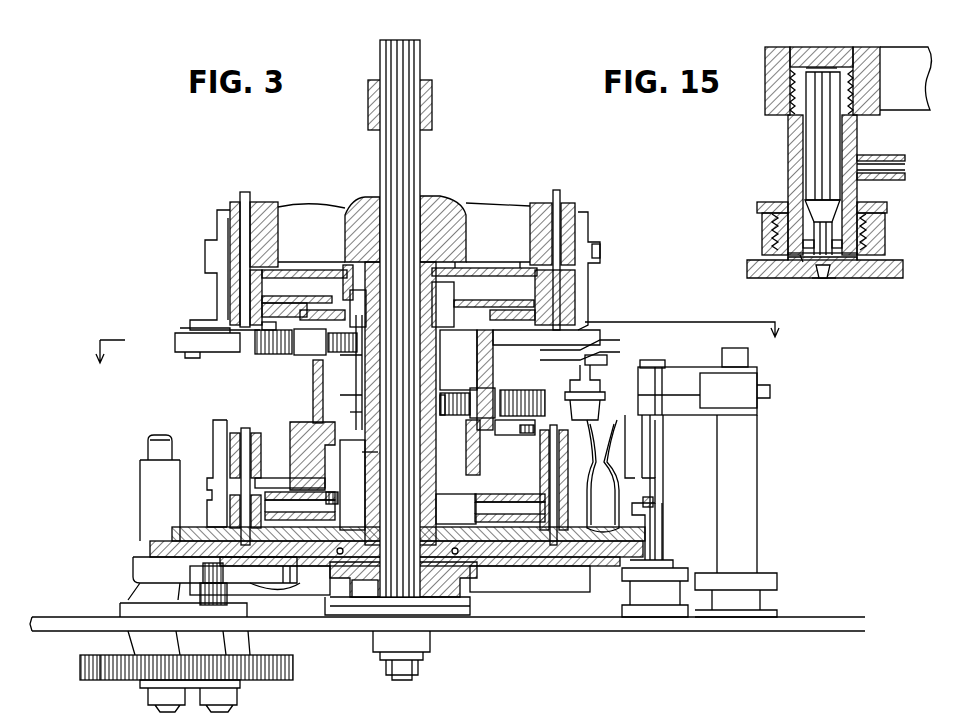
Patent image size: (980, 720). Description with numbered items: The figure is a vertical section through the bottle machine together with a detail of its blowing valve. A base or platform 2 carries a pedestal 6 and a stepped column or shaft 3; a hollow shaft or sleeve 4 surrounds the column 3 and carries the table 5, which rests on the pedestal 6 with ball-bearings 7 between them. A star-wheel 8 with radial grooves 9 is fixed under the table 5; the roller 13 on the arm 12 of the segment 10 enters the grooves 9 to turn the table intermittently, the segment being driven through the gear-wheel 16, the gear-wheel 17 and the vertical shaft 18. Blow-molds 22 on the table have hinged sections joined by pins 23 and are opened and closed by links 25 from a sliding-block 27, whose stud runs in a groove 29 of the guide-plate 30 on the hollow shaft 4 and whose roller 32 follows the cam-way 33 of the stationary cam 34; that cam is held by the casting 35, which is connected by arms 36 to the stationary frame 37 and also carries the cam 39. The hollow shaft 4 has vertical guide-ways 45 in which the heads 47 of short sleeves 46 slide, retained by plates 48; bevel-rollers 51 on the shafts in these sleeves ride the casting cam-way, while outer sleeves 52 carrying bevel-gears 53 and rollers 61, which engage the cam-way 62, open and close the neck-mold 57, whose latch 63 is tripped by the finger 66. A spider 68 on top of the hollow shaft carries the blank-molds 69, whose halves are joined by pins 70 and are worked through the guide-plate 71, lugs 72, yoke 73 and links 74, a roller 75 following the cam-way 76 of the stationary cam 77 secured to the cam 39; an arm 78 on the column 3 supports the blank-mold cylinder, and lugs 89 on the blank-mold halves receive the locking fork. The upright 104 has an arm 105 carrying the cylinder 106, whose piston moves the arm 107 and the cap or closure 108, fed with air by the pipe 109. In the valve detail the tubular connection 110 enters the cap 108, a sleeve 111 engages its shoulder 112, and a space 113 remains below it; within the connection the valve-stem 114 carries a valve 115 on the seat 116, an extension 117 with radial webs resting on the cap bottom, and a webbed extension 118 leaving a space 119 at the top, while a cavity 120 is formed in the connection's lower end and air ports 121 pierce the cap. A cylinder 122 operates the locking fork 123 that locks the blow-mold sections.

In FIG. 3, the base or platform 2 is at (322, 634).
In FIG. 3, the column or shaft 3 is at (413, 151).
In FIG. 3, the hollow shaft or sleeve 4 is at (442, 392).
In FIG. 3, the plate or table 5 is at (607, 558).
In FIG. 3, the pedestal 6 is at (465, 600).
In FIG. 3, the ball-bearings 7 is at (403, 580).
In FIG. 3, the star-wheel 8 is at (317, 570).
In FIG. 3, the radial grooves 9 is at (294, 583).
In FIG. 3, the segment 10 is at (132, 578).
In FIG. 3, the arm 12 is at (219, 607).
In FIG. 3, the stud or roller 13 is at (202, 578).
In FIG. 3, the gear-wheel 16 is at (268, 680).
In FIG. 3, the gear-wheel 17 is at (100, 680).
In FIG. 3, the vertical shaft 18 is at (147, 451).
In FIG. 3, the blow-molds 22 is at (222, 462).
In FIG. 3, the pins 23 is at (251, 448).
In FIG. 3, the links 25 is at (262, 490).
In FIG. 3, the sliding-block 27 is at (405, 511).
In FIG. 3, the groove 29 is at (470, 526).
In FIG. 3, the guide-plate 30 is at (492, 560).
In FIG. 3, the stud or roller 32 is at (298, 493).
In FIG. 3, the cam-way 33 is at (345, 496).
In FIG. 3, the stationary cam 34 is at (349, 492).
In FIG. 3, the casting 35 is at (340, 455).
In FIG. 3, the arms 36 is at (546, 347).
In FIG. 3, the stationary frame 37 is at (664, 486).
In FIG. 3, the cam 39 is at (458, 360).
In FIG. 3, the vertical guide-ways 45 is at (358, 391).
In FIG. 3, the short sleeves 46 is at (330, 358).
In FIG. 3, the heads 47 is at (463, 451).
In FIG. 3, the plates 48 is at (360, 410).
In FIG. 3, the bevel-rollers 51 is at (322, 352).
In FIG. 3, the sleeves 52 is at (300, 346).
In FIG. 3, the bevel-gears 53 is at (300, 352).
In FIG. 3, the neck-mold 57 is at (178, 356).
In FIG. 3, the studs or rollers 61 is at (268, 330).
In FIG. 3, the cam-way 62 is at (502, 445).
In FIG. 3, the latch 63 is at (648, 400).
In FIG. 3, the finger 66 is at (636, 392).
In FIG. 3, the spider 68 is at (440, 210).
In FIG. 3, the blank-molds 69 is at (216, 228).
In FIG. 3, the pins 70 is at (250, 231).
In FIG. 3, the guide-plate 71 is at (470, 268).
In FIG. 3, the guide-lug 72 is at (316, 274).
In FIG. 3, the yoke 73 is at (303, 303).
In FIG. 3, the links 74 is at (284, 292).
In FIG. 3, the stud or roller 75 is at (483, 304).
In FIG. 3, the cam-way 76 is at (516, 323).
In FIG. 3, the stationary cam 77 is at (358, 308).
In FIG. 3, the arm 78 is at (448, 116).
In FIG. 3, the lugs 89 is at (600, 253).
In FIG. 3, the upright 104 is at (758, 496).
In FIG. 3, the arm 105 is at (704, 391).
In FIG. 3, the cylinder 106 is at (665, 425).
In FIG. 3, the arm 107 is at (630, 352).
In FIG. 15, the arm 107 is at (900, 63).
In FIG. 3, the cap or closure 108 is at (578, 392).
In FIG. 15, the cap or closure 108 is at (886, 231).
In FIG. 3, the pipe 109 is at (584, 360).
In FIG. 15, the pipe 109 is at (906, 164).
In FIG. 15, the tubular connection 110 is at (787, 143).
In FIG. 15, the sleeve 111 is at (757, 213).
In FIG. 15, the shoulder 112 is at (802, 250).
In FIG. 15, the space 113 is at (898, 278).
In FIG. 15, the valve-stem 114 is at (831, 132).
In FIG. 15, the valve 115 is at (832, 208).
In FIG. 15, the seat 116 is at (845, 216).
In FIG. 15, the extension 117 is at (834, 250).
In FIG. 15, the webbed extension 118 is at (830, 92).
In FIG. 15, the space 119 is at (818, 68).
In FIG. 15, the depression or cavity 120 is at (800, 262).
In FIG. 15, the air ports 121 is at (830, 284).
In FIG. 3, the cylinder 122 is at (655, 588).
In FIG. 3, the locking fork 123 is at (664, 540).